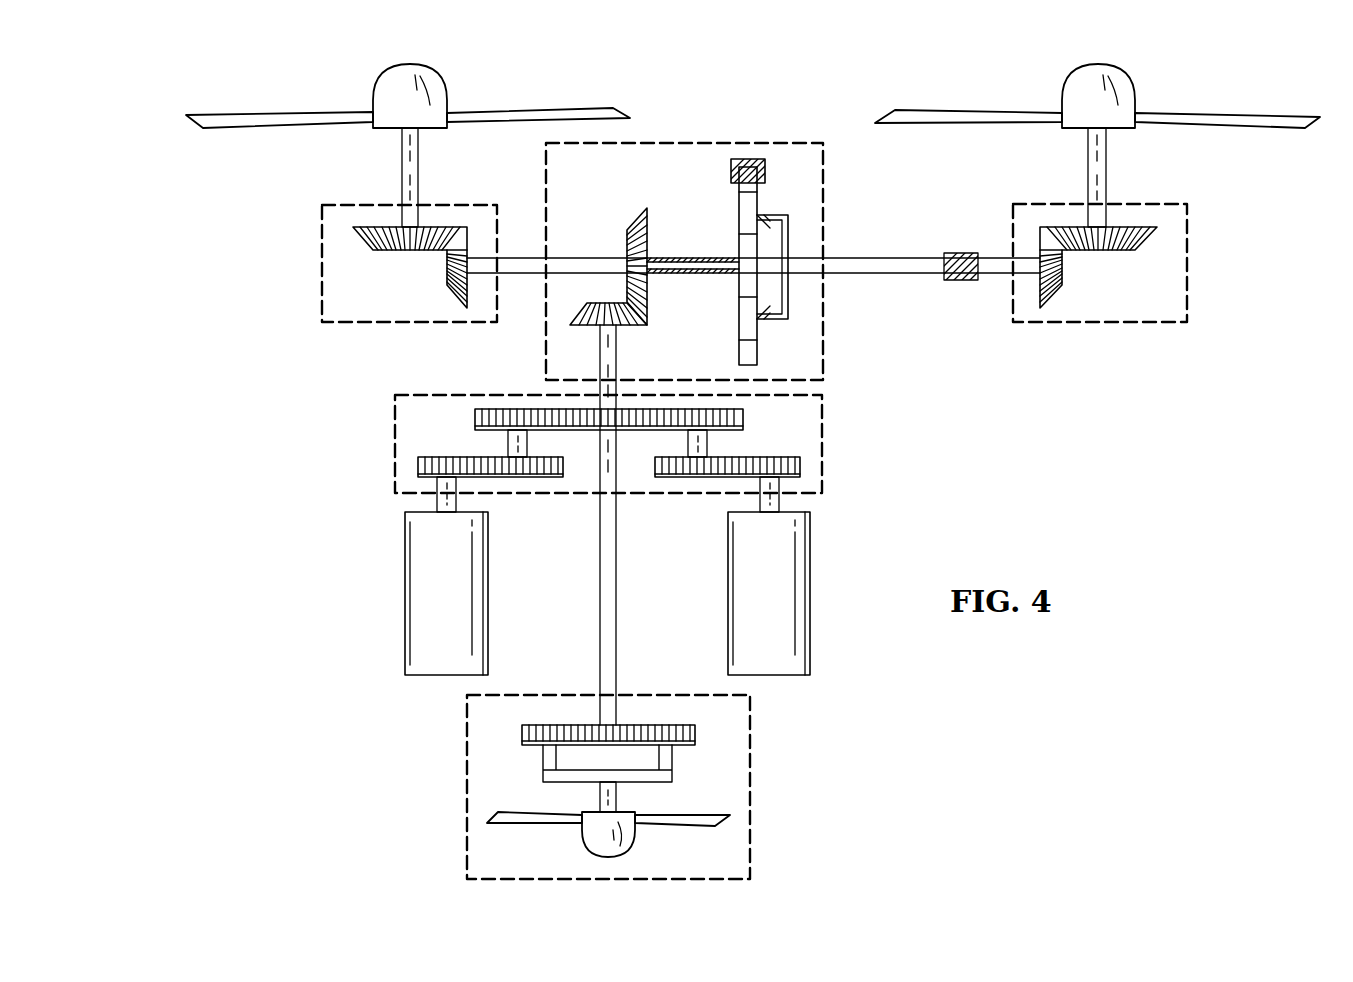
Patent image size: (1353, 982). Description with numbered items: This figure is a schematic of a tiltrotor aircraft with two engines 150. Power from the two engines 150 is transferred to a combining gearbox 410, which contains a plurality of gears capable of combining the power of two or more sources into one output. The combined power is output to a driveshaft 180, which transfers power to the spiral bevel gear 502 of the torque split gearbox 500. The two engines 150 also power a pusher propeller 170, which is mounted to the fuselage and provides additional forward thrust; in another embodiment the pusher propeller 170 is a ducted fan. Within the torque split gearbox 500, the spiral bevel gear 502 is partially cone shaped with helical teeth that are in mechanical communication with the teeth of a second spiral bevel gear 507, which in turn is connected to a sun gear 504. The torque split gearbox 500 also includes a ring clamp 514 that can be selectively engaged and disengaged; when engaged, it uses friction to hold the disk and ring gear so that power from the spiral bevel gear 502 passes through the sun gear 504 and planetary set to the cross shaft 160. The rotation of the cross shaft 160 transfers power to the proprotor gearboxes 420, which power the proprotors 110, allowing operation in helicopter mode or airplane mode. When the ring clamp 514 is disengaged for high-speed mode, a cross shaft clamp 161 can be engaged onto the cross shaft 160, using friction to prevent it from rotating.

The proprotor 110 is at (386, 90).
The engine 150 is at (405, 592).
The cross shaft 160 is at (897, 256).
The cross shaft clamp 161 is at (960, 252).
The pusher propeller 170 is at (467, 797).
The driveshaft 180 is at (617, 366).
The combining gearbox 410 is at (395, 430).
The proprotor gearbox 420 is at (322, 260).
The torque split gearbox 500 is at (676, 261).
The spiral bevel gear 502 is at (586, 312).
The sun gear 504 is at (745, 247).
The spiral bevel gear 507 is at (634, 226).
The ring clamp 514 is at (735, 182).